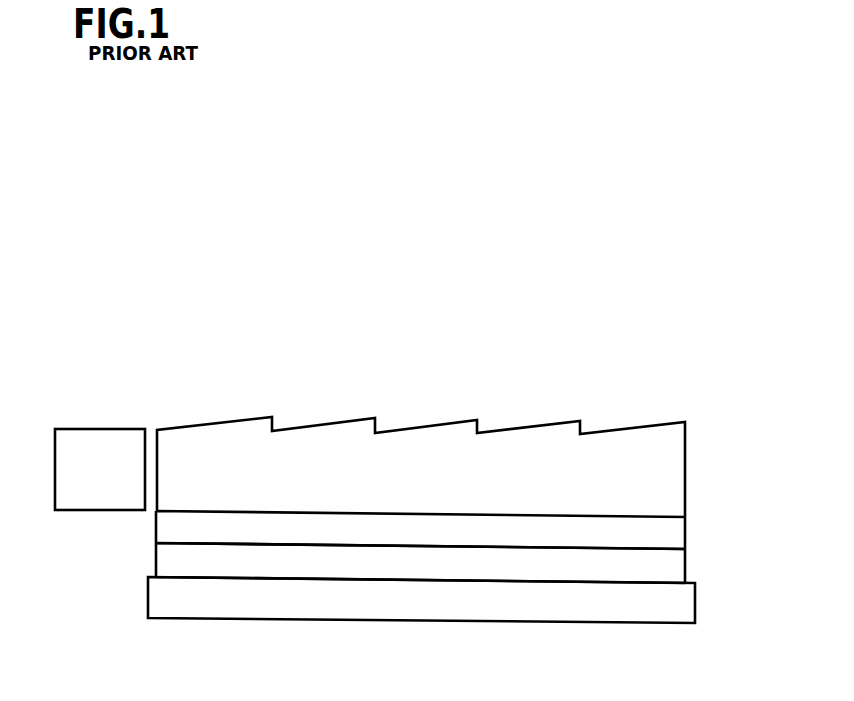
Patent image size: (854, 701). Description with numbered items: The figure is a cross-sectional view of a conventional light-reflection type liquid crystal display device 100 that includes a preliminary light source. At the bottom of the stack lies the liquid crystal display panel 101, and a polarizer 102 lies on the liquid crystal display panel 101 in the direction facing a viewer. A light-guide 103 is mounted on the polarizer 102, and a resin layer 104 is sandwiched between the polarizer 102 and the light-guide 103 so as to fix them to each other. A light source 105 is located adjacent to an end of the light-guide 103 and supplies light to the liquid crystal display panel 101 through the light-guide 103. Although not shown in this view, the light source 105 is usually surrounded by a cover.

The light-reflection type liquid crystal display device 100 is at (127, 318).
The liquid crystal display panel 101 is at (698, 552).
The polarizer 102 is at (687, 536).
The light-guide 103 is at (677, 457).
The resin layer 104 is at (687, 516).
The light source 105 is at (78, 428).